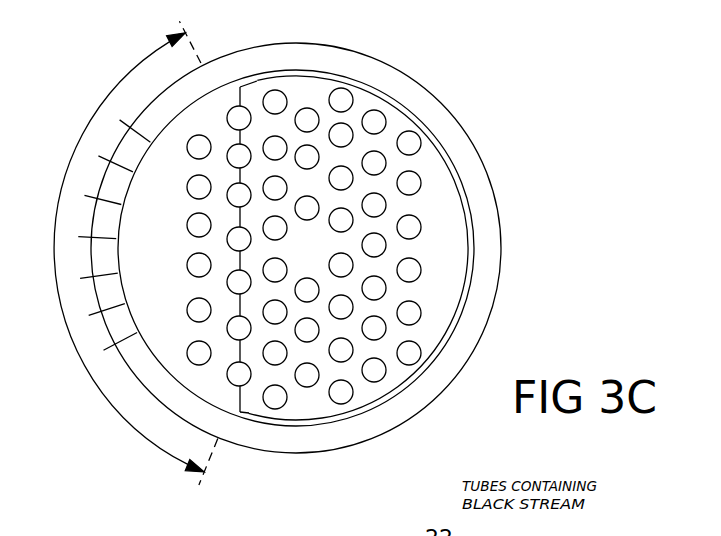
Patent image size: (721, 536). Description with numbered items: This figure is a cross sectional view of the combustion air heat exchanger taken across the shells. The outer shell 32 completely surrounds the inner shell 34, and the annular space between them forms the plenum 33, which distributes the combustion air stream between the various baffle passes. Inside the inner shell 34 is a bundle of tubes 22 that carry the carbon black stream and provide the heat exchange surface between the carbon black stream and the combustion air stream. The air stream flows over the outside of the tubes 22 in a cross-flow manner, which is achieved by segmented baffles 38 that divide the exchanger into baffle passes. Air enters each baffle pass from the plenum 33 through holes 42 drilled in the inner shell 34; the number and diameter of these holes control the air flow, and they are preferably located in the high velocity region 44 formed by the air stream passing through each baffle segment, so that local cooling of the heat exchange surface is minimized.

The tubes 22 is at (313, 397).
The outer shell 32 is at (502, 257).
The plenum 33 is at (478, 198).
The inner shell 34 is at (468, 293).
The segmented baffles 38 is at (163, 93).
The holes 42 is at (133, 128).
The high velocity region 44 is at (78, 145).